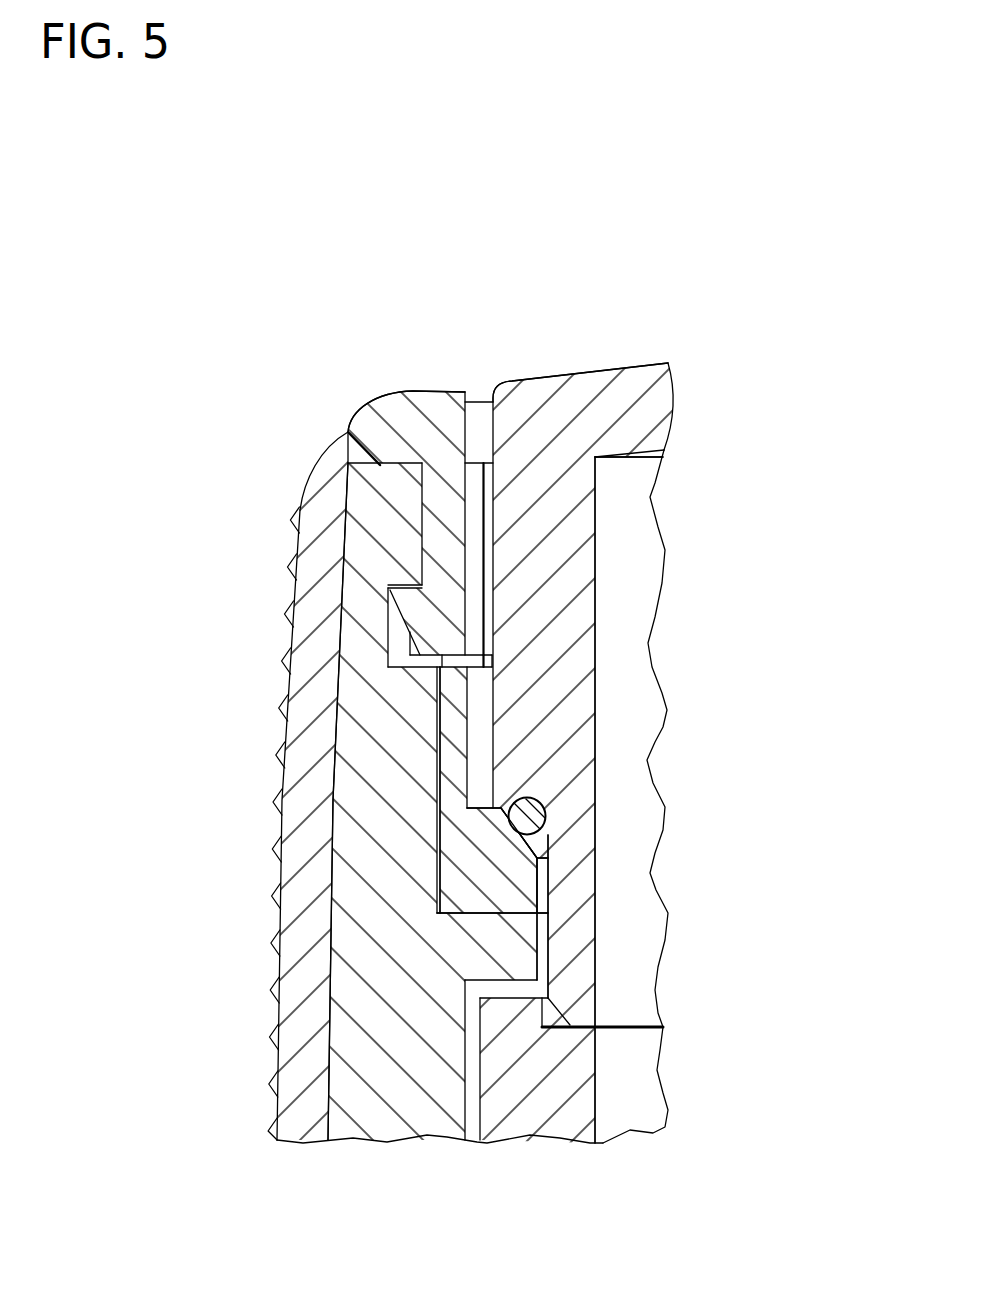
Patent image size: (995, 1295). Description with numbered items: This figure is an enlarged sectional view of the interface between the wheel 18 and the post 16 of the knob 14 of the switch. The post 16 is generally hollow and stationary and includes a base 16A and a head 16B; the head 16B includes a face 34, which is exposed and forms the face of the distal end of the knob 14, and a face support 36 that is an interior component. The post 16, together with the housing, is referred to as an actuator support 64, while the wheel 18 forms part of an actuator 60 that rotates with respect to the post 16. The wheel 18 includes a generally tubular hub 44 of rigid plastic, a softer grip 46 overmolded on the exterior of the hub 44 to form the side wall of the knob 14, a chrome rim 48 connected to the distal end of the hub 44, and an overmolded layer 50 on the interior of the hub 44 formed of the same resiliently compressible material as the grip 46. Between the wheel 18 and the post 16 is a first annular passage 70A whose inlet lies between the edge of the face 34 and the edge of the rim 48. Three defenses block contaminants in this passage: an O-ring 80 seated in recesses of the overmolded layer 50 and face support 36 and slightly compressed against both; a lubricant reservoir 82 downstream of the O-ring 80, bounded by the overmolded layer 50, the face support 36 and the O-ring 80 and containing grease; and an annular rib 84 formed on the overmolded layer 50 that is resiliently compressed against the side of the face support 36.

The knob 14 is at (388, 285).
The actuator support 64 is at (570, 266).
The post 16 is at (527, 373).
The face 34 is at (620, 364).
The rim 48 is at (410, 390).
The wheel 18 is at (318, 441).
The head 16B is at (603, 580).
The face support 36 is at (597, 670).
The first annular passage 70A is at (482, 678).
The O-ring 80 is at (541, 796).
The lubricant reservoir 82 is at (546, 848).
The rib 84 is at (540, 852).
The overmolded layer 50 is at (470, 857).
The actuator 60 is at (186, 937).
The grip 46 is at (278, 1022).
The hub 44 is at (385, 1065).
The base 16A is at (594, 1094).